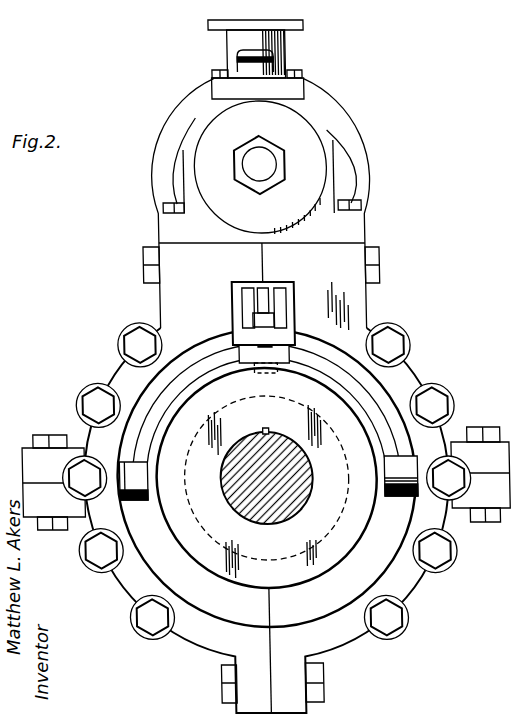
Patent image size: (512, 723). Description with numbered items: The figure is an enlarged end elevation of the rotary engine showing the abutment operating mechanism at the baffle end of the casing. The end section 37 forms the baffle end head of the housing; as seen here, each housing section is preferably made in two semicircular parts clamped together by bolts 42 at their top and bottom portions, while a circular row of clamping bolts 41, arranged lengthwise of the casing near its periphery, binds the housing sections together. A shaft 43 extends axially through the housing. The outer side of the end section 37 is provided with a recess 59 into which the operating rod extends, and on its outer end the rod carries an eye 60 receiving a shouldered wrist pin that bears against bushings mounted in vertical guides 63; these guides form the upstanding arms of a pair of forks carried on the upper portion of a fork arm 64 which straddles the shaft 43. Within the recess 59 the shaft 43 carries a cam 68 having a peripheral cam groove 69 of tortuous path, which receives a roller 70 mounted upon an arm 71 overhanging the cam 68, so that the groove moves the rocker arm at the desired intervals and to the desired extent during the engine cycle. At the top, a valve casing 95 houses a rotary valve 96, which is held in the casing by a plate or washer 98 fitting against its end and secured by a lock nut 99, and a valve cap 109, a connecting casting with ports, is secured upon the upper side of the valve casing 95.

The valve cap 109 is at (287, 43).
The plate or washer 98 is at (217, 130).
The rotary valve 96 is at (256, 165).
The lock nut 99 is at (237, 162).
The valve casing 95 is at (171, 176).
The bolts 42 is at (137, 258).
The end section 37 is at (162, 306).
The recess 59 is at (313, 347).
The fork arm 64 is at (367, 380).
The clamping bolts 41 is at (82, 403).
The eye 60 is at (257, 290).
The vertical guides 63 is at (237, 300).
The roller 70 is at (244, 380).
The arm 71 is at (294, 362).
The shaft 43 is at (288, 426).
The cam groove 69 is at (214, 567).
The cam 68 is at (305, 560).